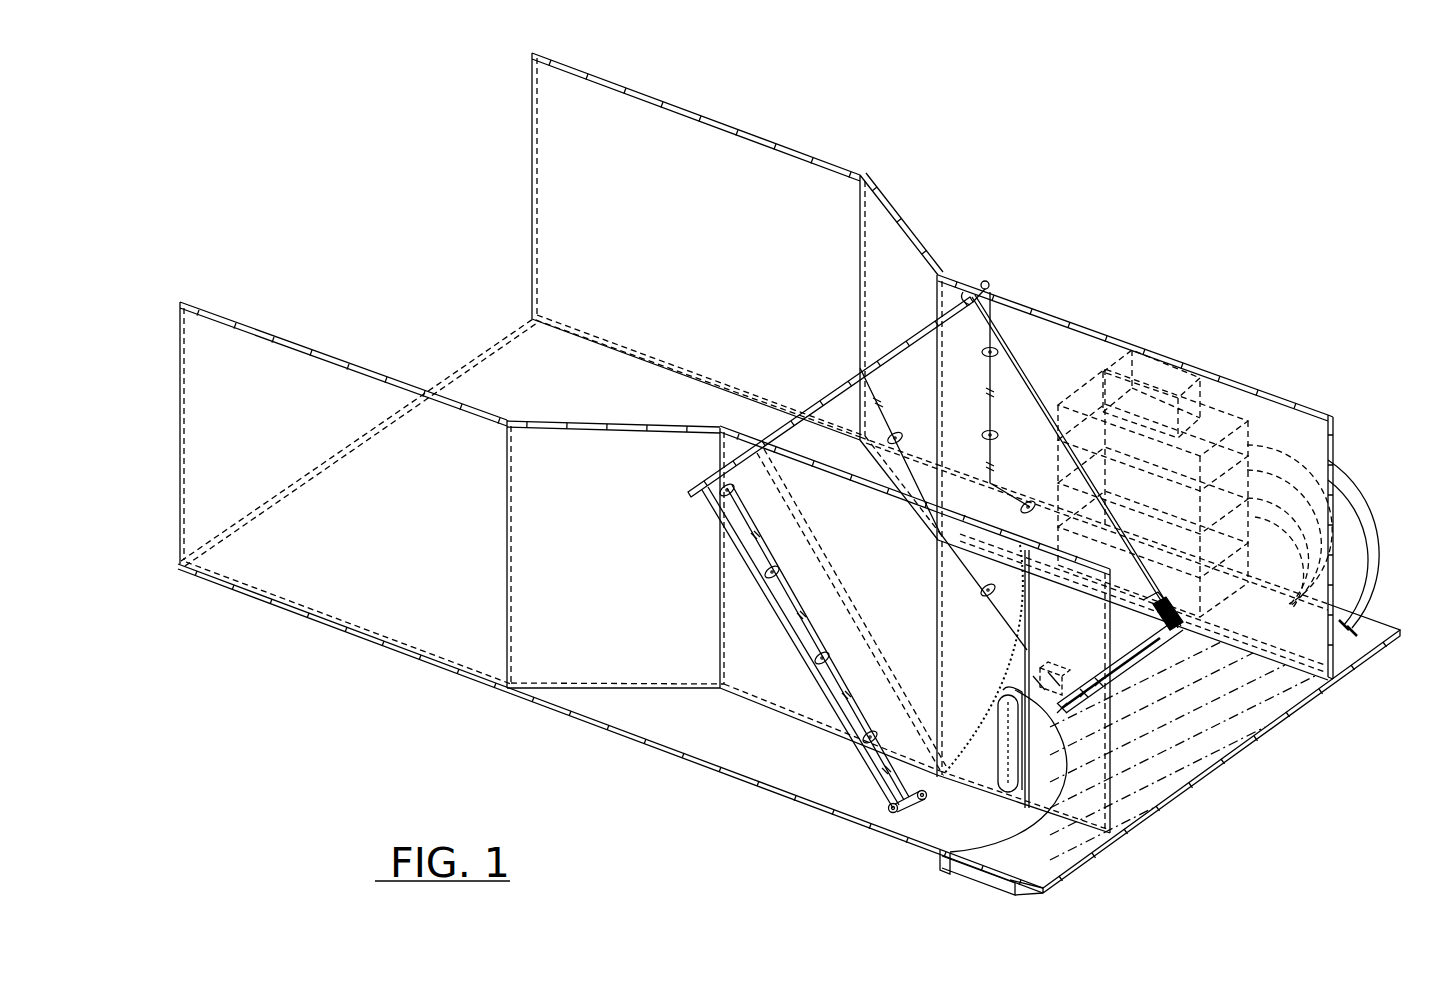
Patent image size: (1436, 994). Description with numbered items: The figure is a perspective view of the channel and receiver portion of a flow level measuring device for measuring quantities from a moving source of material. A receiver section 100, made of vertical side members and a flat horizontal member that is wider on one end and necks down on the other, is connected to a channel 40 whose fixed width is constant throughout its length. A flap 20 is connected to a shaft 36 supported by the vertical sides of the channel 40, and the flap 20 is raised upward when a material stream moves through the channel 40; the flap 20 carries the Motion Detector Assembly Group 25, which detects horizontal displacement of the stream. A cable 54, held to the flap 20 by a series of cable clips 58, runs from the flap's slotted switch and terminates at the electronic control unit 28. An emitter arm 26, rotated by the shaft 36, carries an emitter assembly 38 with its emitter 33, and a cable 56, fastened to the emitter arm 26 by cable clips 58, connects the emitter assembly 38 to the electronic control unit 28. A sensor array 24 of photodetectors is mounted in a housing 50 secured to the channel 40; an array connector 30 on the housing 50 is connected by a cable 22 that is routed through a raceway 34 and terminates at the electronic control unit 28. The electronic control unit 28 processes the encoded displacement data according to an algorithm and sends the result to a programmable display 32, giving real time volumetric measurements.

The receiver section 100 is at (633, 92).
The flap 20 is at (967, 340).
The cable 22 is at (1345, 470).
The sensor array 24 is at (990, 693).
The Motion Detector Assembly Group (MDAG) 25 is at (1143, 662).
The emitter arm 26 is at (803, 642).
The electronic control unit (ECU) 28 is at (1233, 430).
The array connector 30 is at (1038, 672).
The programmable display 32 is at (1163, 372).
The emitter 33 is at (888, 810).
The raceway 34 is at (973, 873).
The shaft 36 is at (907, 341).
The emitter assembly 38 is at (920, 796).
The channel 40 is at (1068, 316).
The housing 50 is at (942, 582).
The cable 54 is at (940, 487).
The cable 56 is at (740, 521).
The cable clips 58 is at (900, 435).